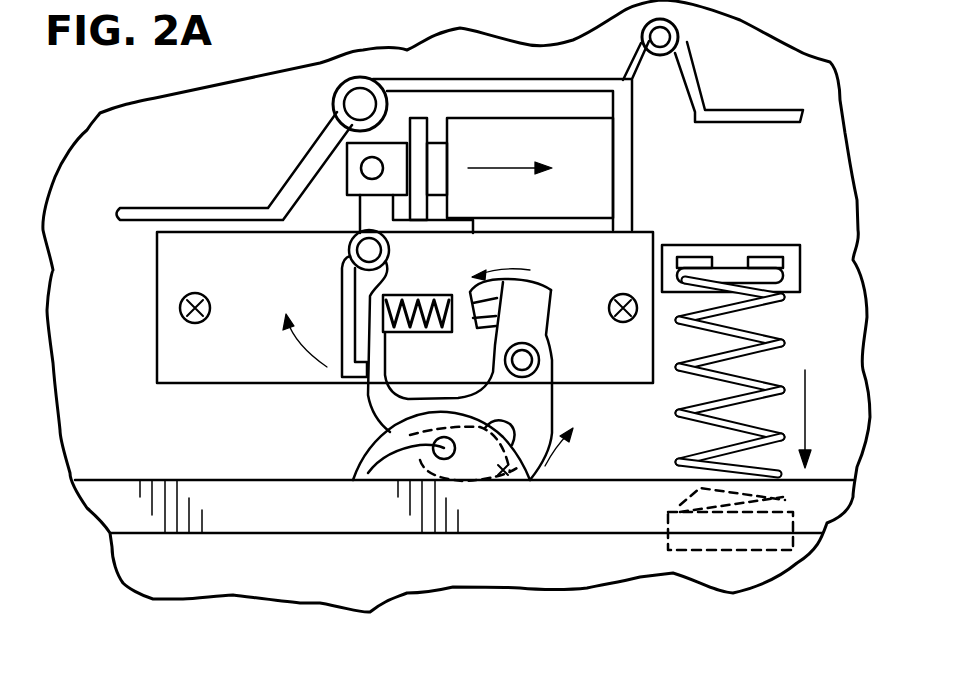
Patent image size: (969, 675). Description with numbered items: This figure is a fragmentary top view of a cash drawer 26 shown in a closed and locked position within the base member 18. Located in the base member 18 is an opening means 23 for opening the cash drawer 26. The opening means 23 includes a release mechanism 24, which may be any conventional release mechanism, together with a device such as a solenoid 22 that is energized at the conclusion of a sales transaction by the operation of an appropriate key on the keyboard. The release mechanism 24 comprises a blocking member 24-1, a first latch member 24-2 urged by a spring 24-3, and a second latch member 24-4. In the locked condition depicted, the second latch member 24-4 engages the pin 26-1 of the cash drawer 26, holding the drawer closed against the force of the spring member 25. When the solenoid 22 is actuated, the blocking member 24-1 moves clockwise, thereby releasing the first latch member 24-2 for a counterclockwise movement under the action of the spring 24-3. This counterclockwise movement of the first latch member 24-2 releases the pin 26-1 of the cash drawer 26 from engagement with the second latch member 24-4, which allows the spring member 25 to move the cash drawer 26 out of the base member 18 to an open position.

The base member 18 is at (787, 52).
The solenoid 22 is at (600, 186).
The opening means 23 is at (699, 193).
The release mechanism 24 is at (630, 250).
The blocking member 24-1 is at (348, 264).
The first latch member 24-2 is at (378, 312).
The spring 24-3 is at (393, 295).
The second latch member 24-4 is at (505, 482).
The spring member 25 is at (775, 345).
The cash drawer 26 is at (607, 572).
The pin 26-1 is at (373, 463).